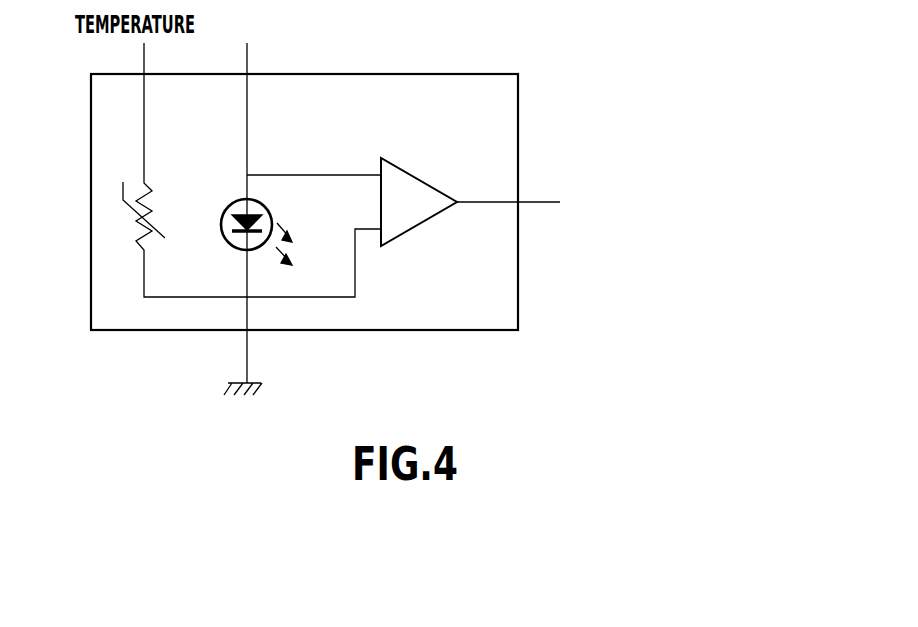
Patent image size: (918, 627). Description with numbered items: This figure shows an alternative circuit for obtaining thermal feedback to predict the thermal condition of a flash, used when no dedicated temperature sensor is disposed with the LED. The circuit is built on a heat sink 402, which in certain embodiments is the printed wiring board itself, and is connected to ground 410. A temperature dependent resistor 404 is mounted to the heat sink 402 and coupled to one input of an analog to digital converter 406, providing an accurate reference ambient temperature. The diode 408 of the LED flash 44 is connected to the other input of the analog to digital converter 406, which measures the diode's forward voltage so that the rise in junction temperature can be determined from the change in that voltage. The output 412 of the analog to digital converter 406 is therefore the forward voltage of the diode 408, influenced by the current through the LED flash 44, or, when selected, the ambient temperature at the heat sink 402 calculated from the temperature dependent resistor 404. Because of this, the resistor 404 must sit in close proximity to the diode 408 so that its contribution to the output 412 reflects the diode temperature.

The heat sink 402 is at (106, 303).
The temperature dependent resistor 404 is at (125, 199).
The LED flash 44 is at (249, 197).
The diode 408 is at (226, 206).
The analog to digital converter (ADC) 406 is at (421, 181).
The ground 410 is at (238, 397).
The output of the ADC 412 is at (622, 200).